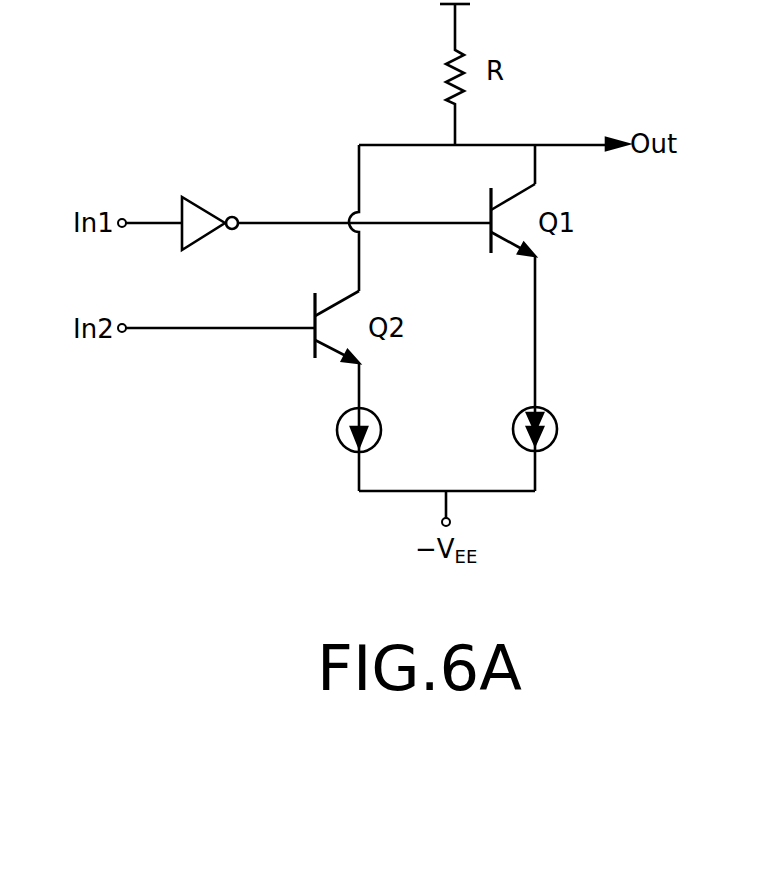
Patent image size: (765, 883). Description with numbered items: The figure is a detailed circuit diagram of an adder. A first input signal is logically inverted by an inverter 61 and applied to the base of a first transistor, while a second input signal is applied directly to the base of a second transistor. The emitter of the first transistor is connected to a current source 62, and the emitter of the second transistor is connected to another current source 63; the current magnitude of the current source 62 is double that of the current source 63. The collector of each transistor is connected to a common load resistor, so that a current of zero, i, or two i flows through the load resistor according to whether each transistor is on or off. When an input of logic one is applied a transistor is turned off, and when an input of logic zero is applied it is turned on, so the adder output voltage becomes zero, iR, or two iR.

The inverter 61 is at (207, 212).
The current source 62 is at (553, 413).
The current source 63 is at (378, 414).